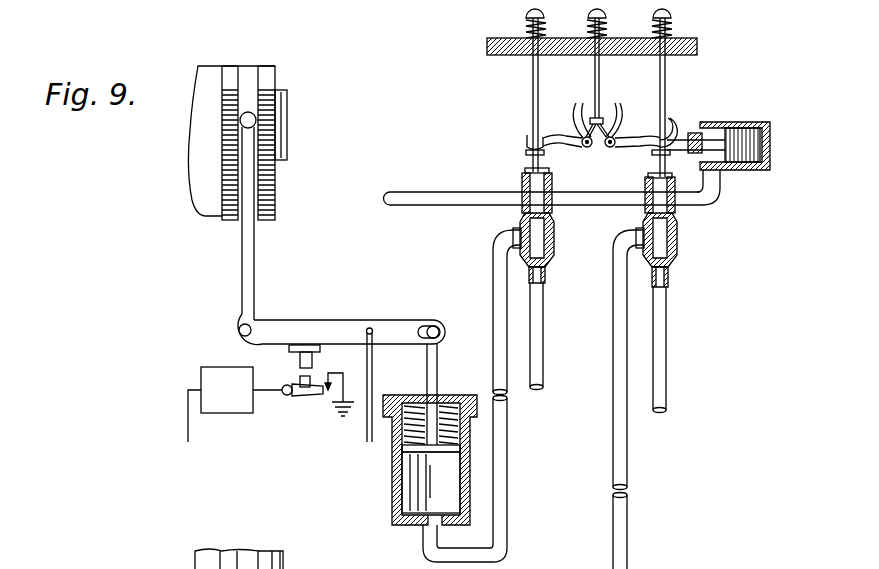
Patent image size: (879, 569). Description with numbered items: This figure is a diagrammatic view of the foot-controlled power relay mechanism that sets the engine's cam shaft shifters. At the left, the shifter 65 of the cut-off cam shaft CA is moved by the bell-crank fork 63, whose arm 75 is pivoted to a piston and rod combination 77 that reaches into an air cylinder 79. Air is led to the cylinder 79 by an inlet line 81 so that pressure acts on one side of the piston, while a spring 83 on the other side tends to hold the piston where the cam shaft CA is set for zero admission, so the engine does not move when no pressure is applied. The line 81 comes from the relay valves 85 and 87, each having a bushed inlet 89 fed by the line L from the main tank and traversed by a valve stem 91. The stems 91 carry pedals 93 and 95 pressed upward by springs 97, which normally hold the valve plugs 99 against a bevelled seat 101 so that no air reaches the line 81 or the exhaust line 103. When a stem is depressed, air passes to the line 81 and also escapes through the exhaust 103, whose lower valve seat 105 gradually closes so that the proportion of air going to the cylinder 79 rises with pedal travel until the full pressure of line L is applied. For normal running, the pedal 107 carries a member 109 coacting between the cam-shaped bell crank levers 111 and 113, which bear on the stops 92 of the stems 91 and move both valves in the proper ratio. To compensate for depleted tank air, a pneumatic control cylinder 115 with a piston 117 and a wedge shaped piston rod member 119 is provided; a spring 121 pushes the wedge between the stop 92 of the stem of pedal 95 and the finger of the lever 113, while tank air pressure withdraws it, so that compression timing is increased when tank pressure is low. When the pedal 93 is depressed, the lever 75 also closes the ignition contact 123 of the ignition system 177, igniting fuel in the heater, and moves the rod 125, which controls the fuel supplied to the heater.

The fork 63 is at (257, 270).
The shifter 65 is at (278, 170).
The cut-off cam shaft CA is at (290, 117).
The arm 75 is at (330, 325).
The piston and rod combination 77 is at (437, 372).
The air cylinder 79 is at (412, 488).
The inlet line 81 is at (507, 535).
The spring 83 is at (462, 432).
The relay valve 85 is at (680, 240).
The relay valve 87 is at (554, 242).
The bushed inlet 89 is at (548, 200).
The valve stem 91 is at (530, 162).
The stop 92 is at (518, 140).
The pedal 93 is at (526, 17).
The pedal 95 is at (672, 16).
The spring 97 is at (488, 44).
The valve plug 99 is at (540, 252).
The bevelled seat 101 is at (520, 212).
The exhaust line 103 is at (544, 362).
The valve seat 105 is at (545, 275).
The pedal 107 is at (604, 16).
The member 109 is at (612, 105).
The cam shaped bell crank lever 111 is at (580, 108).
The cam shaped bell crank lever 113 is at (606, 122).
The pneumatic control cylinder 115 is at (722, 122).
The piston 117 is at (745, 128).
The wedge shaped piston rod member 119 is at (690, 135).
The spring 121 is at (722, 172).
The ignition contact 123 is at (306, 398).
The rod 125 is at (366, 442).
The ignition system 177 is at (237, 405).
The line L is at (437, 195).